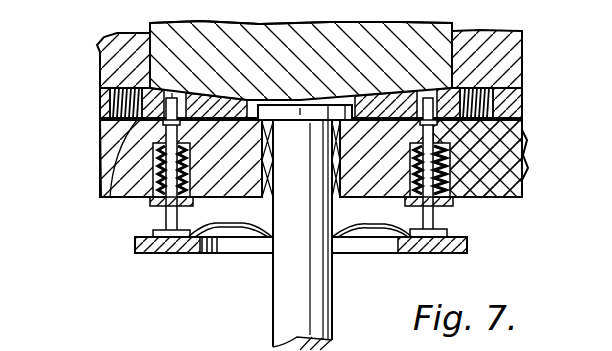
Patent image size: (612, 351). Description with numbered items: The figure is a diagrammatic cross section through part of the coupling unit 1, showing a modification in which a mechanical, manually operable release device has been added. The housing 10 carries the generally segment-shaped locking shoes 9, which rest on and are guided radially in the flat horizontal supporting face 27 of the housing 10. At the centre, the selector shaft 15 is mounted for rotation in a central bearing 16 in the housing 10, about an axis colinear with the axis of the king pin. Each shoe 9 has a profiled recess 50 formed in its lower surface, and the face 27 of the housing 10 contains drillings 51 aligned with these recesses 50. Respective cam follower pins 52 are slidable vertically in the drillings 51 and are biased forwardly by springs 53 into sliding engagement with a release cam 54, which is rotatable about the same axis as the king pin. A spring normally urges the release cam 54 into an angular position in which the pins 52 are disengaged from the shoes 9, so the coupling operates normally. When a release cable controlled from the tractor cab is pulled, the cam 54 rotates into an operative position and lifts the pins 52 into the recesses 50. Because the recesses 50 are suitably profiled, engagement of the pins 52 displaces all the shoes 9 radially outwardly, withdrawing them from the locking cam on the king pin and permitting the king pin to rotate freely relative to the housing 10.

The assembly 1 is at (408, 43).
The shoe 9 is at (112, 173).
The housing 10 is at (115, 138).
The selector shaft 15 is at (310, 317).
The central bearing 16 is at (333, 207).
The horizontal face 27 is at (257, 100).
The profiled recess 50 is at (178, 98).
The drilling 51 is at (120, 196).
The cam follower pin 52 is at (181, 216).
The spring 53 is at (146, 205).
The release cam 54 is at (367, 232).